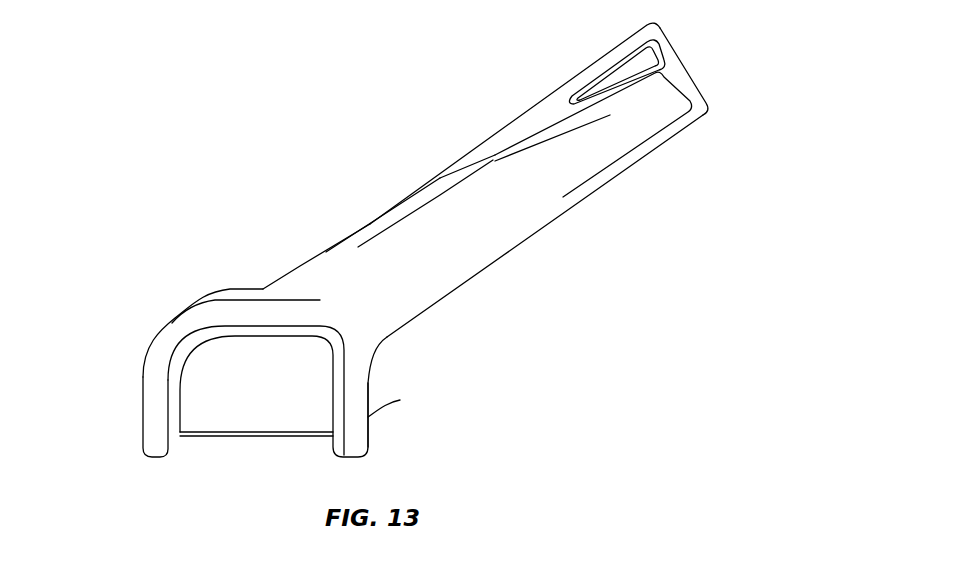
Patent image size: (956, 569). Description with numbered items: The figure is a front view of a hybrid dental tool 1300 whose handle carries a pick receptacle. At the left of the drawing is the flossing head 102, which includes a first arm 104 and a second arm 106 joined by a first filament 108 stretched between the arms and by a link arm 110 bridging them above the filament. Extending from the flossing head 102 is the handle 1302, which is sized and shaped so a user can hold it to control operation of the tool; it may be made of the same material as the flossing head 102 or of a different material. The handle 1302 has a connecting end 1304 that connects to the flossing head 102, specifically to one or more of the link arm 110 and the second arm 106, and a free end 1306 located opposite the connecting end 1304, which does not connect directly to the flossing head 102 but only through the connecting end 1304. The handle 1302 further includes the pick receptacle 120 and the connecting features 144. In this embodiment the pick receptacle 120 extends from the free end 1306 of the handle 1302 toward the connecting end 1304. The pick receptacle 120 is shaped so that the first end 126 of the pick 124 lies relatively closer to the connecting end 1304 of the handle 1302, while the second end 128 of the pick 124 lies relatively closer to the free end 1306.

The hybrid dental tool 1300 is at (232, 142).
The flossing head 102 is at (170, 322).
The first arm 104 is at (143, 377).
The second arm 106 is at (385, 408).
The first filament 108 is at (270, 438).
The link arm 110 is at (232, 289).
The pick receptacle 120 is at (476, 164).
The pick 124 is at (508, 120).
The first end 126 is at (333, 250).
The second end 128 is at (680, 56).
The connecting features 144 is at (639, 60).
The handle 1302 is at (505, 258).
The connecting end 1304 is at (383, 345).
The free end 1306 is at (708, 90).